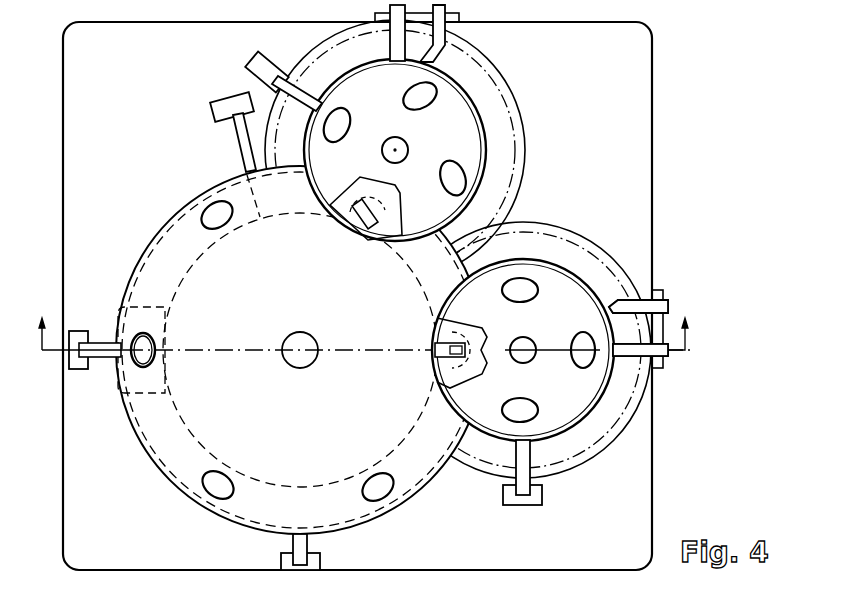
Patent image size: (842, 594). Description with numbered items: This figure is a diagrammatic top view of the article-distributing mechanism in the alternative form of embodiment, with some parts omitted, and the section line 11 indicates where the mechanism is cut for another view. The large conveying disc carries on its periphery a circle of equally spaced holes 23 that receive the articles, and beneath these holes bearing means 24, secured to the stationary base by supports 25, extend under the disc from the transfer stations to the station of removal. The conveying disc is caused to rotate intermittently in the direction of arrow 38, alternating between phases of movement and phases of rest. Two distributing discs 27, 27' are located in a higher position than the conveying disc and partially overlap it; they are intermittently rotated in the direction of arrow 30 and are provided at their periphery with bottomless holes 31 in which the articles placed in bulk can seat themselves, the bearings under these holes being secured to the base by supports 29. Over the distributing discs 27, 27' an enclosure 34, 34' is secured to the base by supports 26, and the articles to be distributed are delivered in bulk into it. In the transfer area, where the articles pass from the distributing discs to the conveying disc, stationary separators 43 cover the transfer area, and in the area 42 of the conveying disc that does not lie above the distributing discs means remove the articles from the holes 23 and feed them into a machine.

The section line 11 is at (367, 334).
The holes 23 is at (214, 212).
The bearing means 24 is at (178, 455).
The supports 25 is at (100, 345).
The supports 26 is at (392, 44).
The distributing disc 27 is at (435, 150).
The distributing disc 27' is at (523, 378).
The supports 29 is at (442, 55).
The arrow 30 is at (428, 152).
The bottomless holes 31 is at (523, 293).
The enclosure 34 is at (415, 150).
The enclosure 34' is at (523, 350).
The arrow 38 is at (342, 270).
The area 42 is at (120, 278).
The stationary separators 43 is at (363, 200).